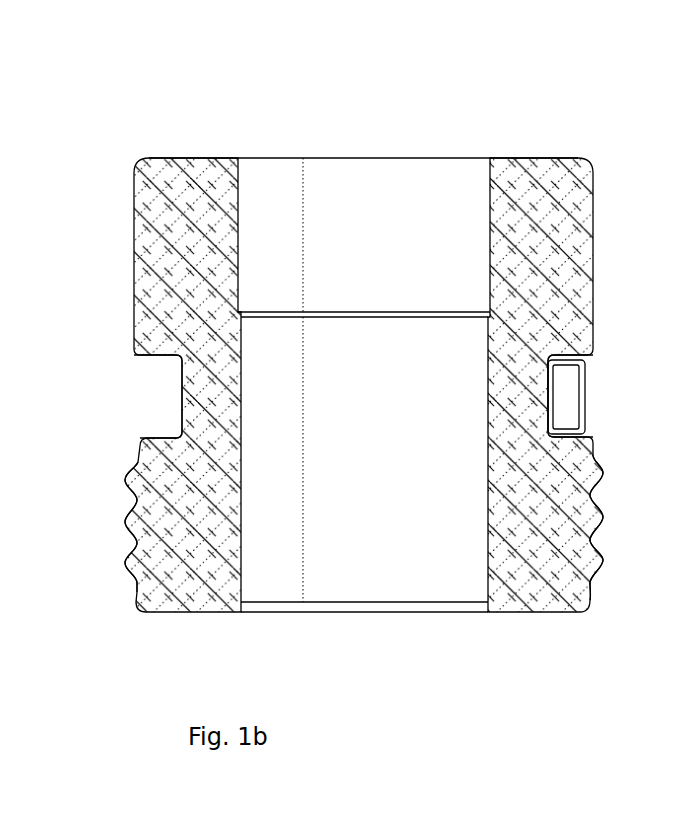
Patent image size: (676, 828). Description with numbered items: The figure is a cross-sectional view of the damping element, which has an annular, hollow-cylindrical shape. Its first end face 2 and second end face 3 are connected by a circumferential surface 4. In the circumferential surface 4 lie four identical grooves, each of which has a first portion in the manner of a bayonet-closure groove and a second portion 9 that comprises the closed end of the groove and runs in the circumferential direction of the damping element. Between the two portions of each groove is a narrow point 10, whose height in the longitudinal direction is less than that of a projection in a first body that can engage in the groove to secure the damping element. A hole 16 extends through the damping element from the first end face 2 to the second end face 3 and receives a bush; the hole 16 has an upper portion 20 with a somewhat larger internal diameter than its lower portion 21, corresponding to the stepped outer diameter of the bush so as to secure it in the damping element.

The first end face 2 is at (366, 367).
The second end face 3 is at (528, 157).
The circumferential surface 4 is at (595, 296).
The second portion 9 is at (165, 388).
The narrow point 10 is at (143, 450).
The hole 16 is at (393, 130).
The upper portion 20 is at (245, 208).
The lower portion 21 is at (465, 555).